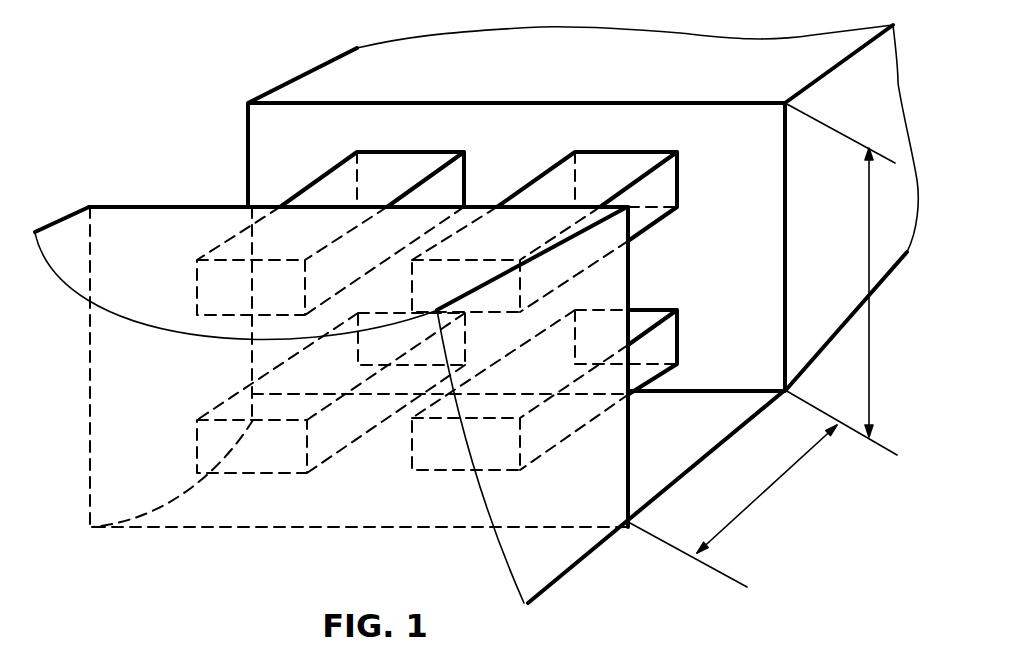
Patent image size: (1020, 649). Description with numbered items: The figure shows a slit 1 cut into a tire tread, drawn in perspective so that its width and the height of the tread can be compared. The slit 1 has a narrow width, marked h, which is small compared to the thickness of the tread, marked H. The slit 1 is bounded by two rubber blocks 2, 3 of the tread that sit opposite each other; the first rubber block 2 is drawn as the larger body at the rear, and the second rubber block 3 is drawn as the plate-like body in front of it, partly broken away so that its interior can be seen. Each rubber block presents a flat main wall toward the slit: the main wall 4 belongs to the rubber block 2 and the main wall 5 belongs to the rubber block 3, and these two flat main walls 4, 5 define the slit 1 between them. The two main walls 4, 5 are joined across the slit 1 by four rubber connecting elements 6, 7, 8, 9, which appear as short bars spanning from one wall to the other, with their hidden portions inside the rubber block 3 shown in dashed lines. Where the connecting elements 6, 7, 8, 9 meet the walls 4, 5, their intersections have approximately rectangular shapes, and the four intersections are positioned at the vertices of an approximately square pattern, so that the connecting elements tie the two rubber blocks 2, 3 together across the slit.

The slit 1 is at (476, 301).
The rubber block 2 is at (523, 65).
The rubber block 3 is at (145, 275).
The main wall 4 is at (293, 132).
The main wall 5 is at (208, 205).
The rubber connecting element 6 is at (650, 189).
The rubber connecting element 7 is at (645, 353).
The rubber connecting element 8 is at (373, 173).
The rubber connecting element 9 is at (345, 420).